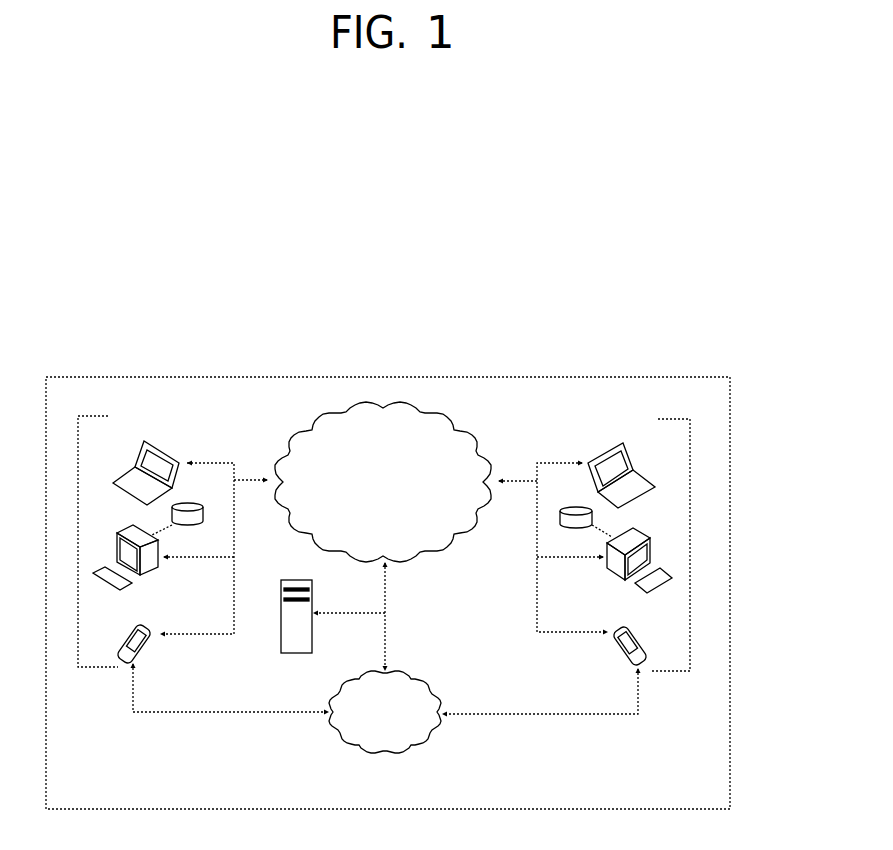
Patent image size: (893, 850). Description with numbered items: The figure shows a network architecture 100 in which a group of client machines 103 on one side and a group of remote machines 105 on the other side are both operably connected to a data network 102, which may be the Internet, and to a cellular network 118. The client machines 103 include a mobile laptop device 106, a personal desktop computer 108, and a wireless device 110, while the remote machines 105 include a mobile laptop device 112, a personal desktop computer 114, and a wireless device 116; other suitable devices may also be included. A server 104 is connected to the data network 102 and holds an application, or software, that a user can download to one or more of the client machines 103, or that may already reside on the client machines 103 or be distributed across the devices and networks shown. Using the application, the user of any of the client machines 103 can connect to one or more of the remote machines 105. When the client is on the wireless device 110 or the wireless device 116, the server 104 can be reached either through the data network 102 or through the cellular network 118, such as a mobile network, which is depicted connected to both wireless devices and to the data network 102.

The network architecture 100 is at (117, 375).
The data network 102 is at (283, 442).
The client machines 103 is at (92, 671).
The server 104 is at (310, 597).
The remote machines 105 is at (668, 675).
The mobile laptop device 106 is at (133, 465).
The personal desktop computer 108 is at (113, 551).
The wireless device 110 is at (127, 637).
The mobile laptop device 112 is at (635, 467).
The personal desktop computer 114 is at (650, 535).
The wireless device 116 is at (640, 644).
The cellular network 118 is at (413, 672).